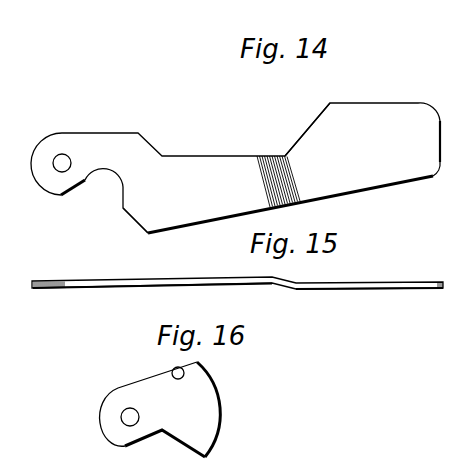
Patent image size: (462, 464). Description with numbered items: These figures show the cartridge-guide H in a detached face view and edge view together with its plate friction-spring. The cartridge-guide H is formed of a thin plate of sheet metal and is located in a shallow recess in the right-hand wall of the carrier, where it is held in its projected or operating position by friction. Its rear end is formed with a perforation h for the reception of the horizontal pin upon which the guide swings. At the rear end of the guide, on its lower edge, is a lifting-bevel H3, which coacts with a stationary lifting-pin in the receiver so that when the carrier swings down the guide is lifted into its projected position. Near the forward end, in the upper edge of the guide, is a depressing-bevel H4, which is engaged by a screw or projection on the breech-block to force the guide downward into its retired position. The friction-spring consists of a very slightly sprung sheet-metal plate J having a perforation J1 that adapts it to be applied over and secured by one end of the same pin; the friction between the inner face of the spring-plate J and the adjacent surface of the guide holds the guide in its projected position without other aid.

In FIG. 14, the cartridge-guide H is at (235, 168).
In FIG. 15, the cartridge-guide H is at (344, 283).
In FIG. 14, the perforation h is at (65, 153).
In FIG. 14, the lifting-bevel H3 is at (134, 219).
In FIG. 14, the depressing-bevel H4 is at (314, 121).
In FIG. 16, the sheet-metal plate J is at (160, 409).
In FIG. 16, the perforation J1 is at (125, 417).